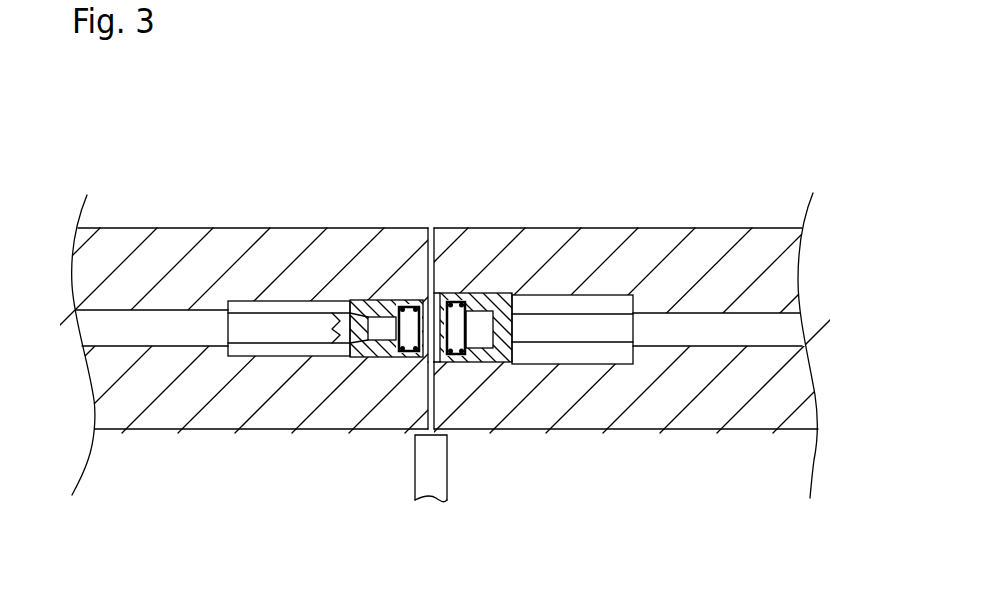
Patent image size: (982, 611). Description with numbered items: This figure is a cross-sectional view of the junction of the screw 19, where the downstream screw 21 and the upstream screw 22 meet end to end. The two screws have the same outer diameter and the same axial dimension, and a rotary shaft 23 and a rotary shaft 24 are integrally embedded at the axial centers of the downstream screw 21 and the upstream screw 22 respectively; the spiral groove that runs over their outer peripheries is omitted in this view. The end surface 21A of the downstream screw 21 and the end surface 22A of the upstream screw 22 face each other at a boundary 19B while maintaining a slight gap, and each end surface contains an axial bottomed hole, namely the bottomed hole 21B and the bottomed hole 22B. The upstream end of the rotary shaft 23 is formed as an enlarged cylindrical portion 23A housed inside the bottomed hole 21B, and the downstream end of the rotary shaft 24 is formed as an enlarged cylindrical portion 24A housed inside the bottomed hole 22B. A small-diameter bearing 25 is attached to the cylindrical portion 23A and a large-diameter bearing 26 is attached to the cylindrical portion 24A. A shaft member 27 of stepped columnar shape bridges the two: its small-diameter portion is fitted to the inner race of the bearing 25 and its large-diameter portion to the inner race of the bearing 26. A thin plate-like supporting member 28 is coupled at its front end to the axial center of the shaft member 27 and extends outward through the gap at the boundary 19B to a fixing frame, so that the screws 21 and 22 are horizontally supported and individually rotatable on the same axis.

The screw 19 is at (583, 183).
The boundary 19B is at (430, 378).
The downstream screw 21 is at (290, 238).
The end surface 21A is at (435, 254).
The bottomed hole 21B is at (250, 302).
The upstream screw 22 is at (722, 238).
The end surface 22A is at (437, 262).
The bottomed hole 22B is at (605, 297).
The rotary shaft 23 is at (93, 327).
The cylindrical portion 23A is at (386, 298).
The rotary shaft 24 is at (783, 326).
The cylindrical portion 24A is at (492, 293).
The bearing 25 is at (388, 359).
The bearing 26 is at (462, 364).
The shaft member 27 is at (456, 338).
The supporting member 28 is at (440, 467).